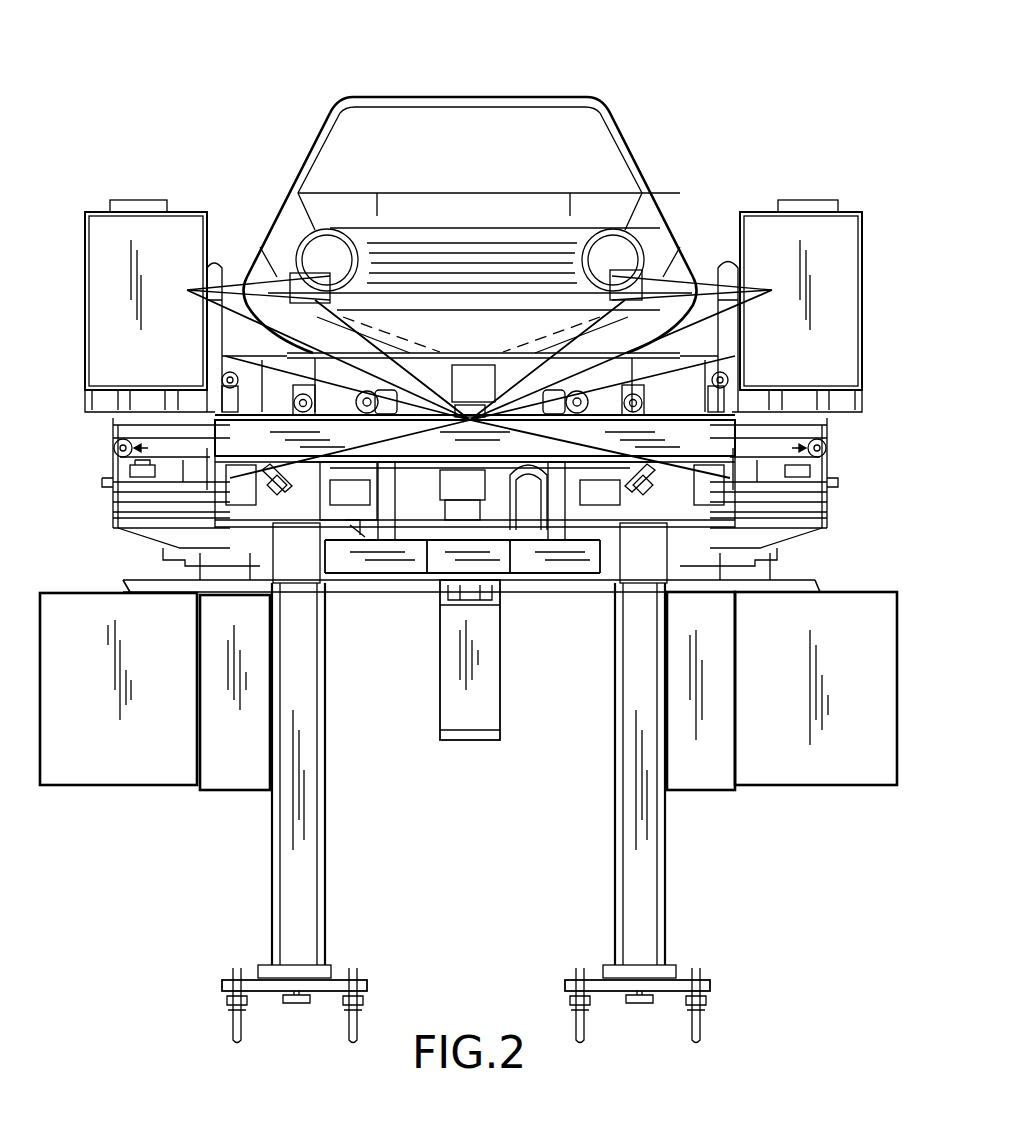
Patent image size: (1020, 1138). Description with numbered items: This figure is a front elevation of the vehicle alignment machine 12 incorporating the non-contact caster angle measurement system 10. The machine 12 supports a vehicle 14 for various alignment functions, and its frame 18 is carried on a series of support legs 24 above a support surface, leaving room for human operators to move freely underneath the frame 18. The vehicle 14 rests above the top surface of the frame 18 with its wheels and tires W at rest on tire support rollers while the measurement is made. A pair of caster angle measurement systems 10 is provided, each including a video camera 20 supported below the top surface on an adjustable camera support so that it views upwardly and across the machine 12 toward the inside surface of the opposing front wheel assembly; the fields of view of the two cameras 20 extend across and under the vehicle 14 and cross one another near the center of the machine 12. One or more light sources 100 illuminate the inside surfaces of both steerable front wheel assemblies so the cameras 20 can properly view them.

The vehicle 14 is at (623, 107).
The light source 100 is at (470, 372).
The wheels and tires W is at (275, 368).
The frame 18 is at (243, 443).
The video camera 20 is at (220, 518).
The caster angle measurement system 10 is at (288, 488).
The vehicle alignment machine 12 is at (270, 831).
The support legs 24 is at (300, 866).